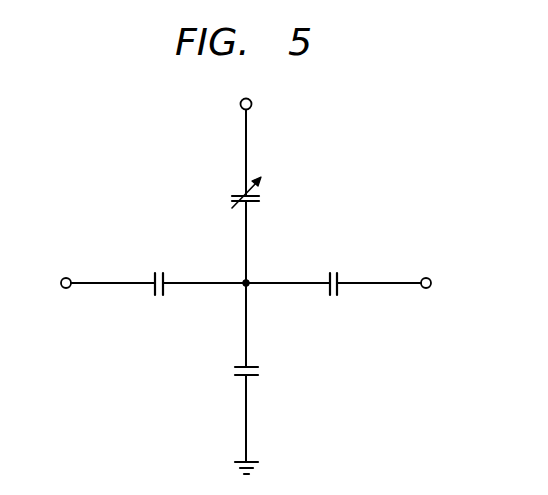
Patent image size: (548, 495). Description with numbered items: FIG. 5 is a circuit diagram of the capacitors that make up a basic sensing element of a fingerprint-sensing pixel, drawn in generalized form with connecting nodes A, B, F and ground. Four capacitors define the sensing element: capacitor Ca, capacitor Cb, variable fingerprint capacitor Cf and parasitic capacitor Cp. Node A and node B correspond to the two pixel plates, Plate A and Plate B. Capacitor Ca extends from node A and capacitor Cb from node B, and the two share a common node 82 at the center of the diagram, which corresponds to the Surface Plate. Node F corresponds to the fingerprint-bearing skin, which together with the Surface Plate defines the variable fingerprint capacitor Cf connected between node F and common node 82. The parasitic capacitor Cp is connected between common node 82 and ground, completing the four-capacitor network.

The common node 82 is at (250, 288).
The node A is at (63, 278).
The node B is at (428, 278).
The node F is at (251, 101).
The capacitor Ca is at (158, 272).
The capacitor Cb is at (332, 268).
The variable fingerprint capacitor Cf is at (233, 194).
The parasitic capacitor Cp is at (232, 374).